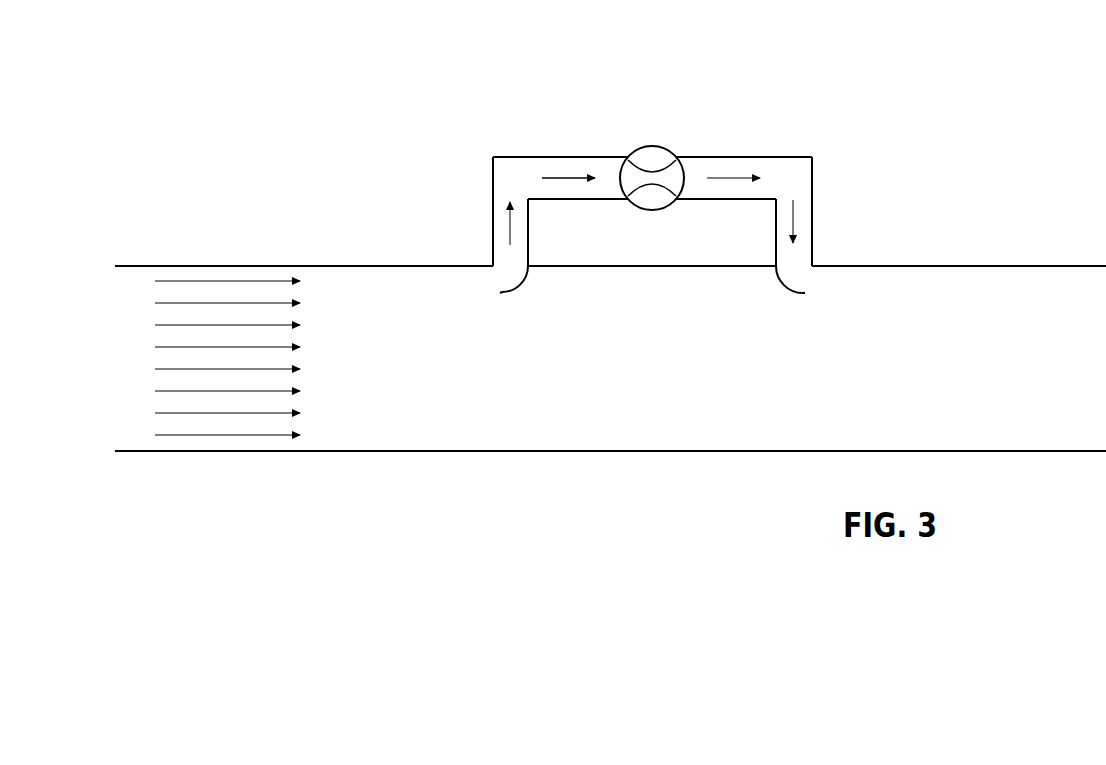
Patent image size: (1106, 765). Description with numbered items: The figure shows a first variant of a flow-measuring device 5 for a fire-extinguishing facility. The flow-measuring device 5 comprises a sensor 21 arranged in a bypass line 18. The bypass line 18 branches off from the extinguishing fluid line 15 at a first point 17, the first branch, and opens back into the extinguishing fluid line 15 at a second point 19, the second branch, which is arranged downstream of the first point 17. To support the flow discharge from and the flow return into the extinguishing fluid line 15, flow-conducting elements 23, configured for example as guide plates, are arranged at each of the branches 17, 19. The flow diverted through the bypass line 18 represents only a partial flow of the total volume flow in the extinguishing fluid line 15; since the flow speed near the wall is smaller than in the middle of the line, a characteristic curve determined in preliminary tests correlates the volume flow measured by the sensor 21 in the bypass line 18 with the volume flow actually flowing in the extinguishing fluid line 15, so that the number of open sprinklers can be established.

The flow-measuring device 5 is at (548, 107).
The extinguishing fluid line 15 is at (998, 266).
The first point 17 is at (480, 247).
The bypass line 18 is at (745, 157).
The second point 19 is at (822, 257).
The sensor 21 is at (652, 147).
The flow-conducting elements 23 is at (517, 290).